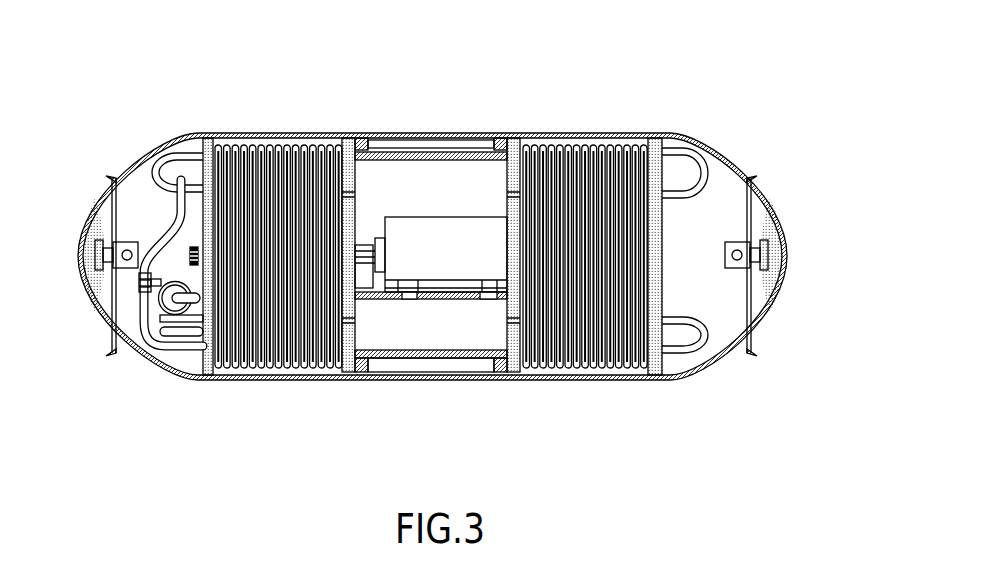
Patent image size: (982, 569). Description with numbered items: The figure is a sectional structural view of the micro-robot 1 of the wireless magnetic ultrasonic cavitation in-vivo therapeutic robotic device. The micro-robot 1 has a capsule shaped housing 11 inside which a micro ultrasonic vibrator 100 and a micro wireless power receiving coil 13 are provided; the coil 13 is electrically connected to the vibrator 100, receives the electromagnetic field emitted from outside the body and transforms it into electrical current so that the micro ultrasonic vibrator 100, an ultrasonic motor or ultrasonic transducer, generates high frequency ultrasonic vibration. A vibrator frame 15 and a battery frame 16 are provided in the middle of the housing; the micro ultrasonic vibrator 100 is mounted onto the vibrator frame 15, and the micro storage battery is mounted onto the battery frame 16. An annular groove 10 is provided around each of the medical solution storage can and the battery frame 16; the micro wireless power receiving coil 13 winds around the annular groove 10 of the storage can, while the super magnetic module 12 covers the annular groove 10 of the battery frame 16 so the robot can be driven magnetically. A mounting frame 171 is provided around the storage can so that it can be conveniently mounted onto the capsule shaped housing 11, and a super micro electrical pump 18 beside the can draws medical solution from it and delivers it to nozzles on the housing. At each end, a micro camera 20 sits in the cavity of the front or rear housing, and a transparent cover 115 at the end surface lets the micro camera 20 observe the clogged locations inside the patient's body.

The micro-robot 1 is at (449, 92).
The annular groove 10 is at (283, 142).
The capsule shaped housing 11 is at (348, 138).
The super magnetic module 12 is at (590, 365).
The micro wireless power receiving coil 13 is at (277, 307).
The vibrator frame 15 is at (424, 152).
The battery frame 16 is at (660, 137).
The super micro electrical pump 18 is at (172, 305).
The micro camera 20 is at (113, 230).
The micro ultrasonic vibrator 100 is at (437, 260).
The transparent cover 115 is at (90, 255).
The mounting frame 171 is at (206, 137).